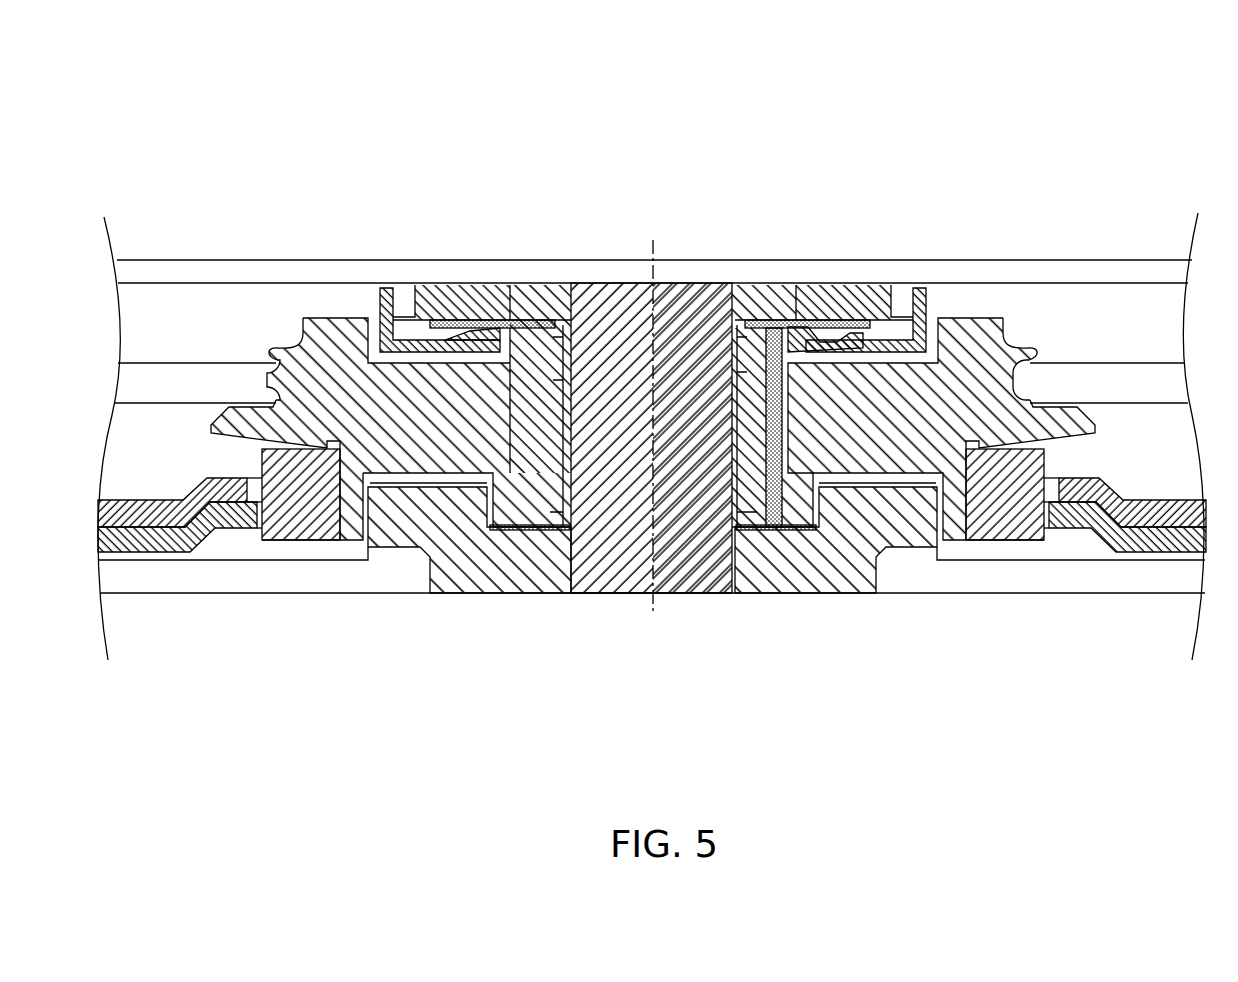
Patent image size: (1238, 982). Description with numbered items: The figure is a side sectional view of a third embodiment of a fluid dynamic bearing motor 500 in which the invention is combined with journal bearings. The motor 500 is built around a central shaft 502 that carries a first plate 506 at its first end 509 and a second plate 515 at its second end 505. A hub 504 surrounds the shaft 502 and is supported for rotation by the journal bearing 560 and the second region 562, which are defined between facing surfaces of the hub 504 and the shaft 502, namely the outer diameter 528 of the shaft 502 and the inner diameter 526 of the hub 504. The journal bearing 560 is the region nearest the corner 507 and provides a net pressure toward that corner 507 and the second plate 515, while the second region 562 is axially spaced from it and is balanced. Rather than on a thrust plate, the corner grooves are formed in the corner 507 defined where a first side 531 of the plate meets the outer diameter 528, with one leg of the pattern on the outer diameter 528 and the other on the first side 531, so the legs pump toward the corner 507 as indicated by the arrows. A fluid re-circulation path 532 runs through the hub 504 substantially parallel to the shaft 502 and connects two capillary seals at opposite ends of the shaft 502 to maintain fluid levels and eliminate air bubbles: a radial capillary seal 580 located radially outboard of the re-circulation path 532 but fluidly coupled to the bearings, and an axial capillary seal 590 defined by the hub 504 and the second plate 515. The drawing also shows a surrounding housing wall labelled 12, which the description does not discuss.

The fluid dynamic bearing motor 500 is at (284, 95).
The tubular housing wall 12 is at (998, 577).
The hub 504 is at (282, 363).
The first plate 506 is at (452, 283).
The journal bearing 560 is at (508, 417).
The second region of journal bearing 562 is at (543, 417).
The first end 509 is at (613, 312).
The shaft 502 is at (667, 557).
The second end 505 is at (613, 593).
The outer diameter of the shaft 528 is at (563, 452).
The inner diameter of the hub 526 is at (568, 455).
The first side 531 is at (562, 452).
The second plate 515 is at (453, 563).
The axial capillary seal 590 is at (847, 543).
The corner 507 is at (738, 540).
The fluid re-circulation path 532 is at (808, 318).
The radial capillary seal 580 is at (862, 333).